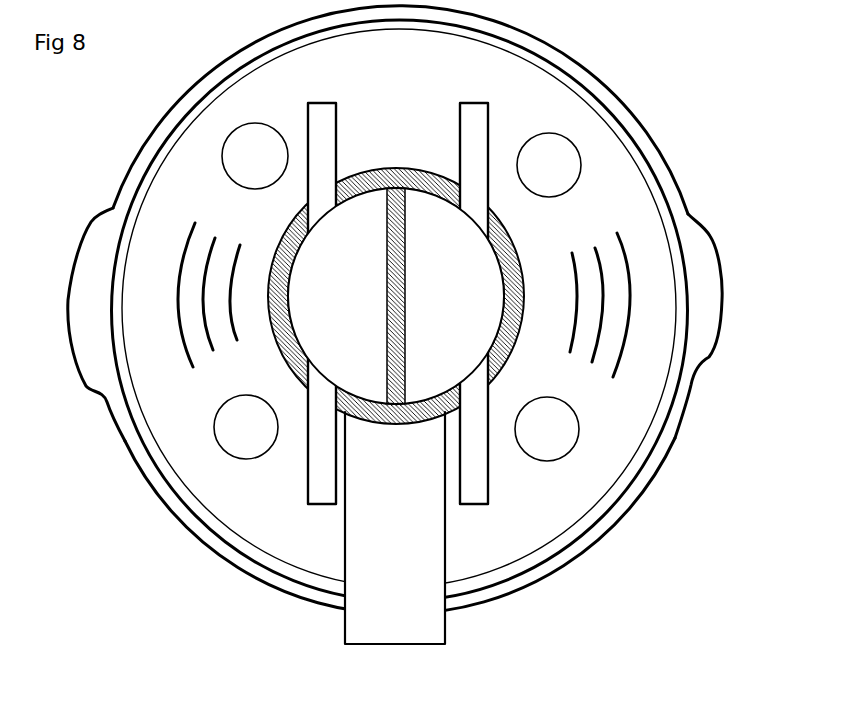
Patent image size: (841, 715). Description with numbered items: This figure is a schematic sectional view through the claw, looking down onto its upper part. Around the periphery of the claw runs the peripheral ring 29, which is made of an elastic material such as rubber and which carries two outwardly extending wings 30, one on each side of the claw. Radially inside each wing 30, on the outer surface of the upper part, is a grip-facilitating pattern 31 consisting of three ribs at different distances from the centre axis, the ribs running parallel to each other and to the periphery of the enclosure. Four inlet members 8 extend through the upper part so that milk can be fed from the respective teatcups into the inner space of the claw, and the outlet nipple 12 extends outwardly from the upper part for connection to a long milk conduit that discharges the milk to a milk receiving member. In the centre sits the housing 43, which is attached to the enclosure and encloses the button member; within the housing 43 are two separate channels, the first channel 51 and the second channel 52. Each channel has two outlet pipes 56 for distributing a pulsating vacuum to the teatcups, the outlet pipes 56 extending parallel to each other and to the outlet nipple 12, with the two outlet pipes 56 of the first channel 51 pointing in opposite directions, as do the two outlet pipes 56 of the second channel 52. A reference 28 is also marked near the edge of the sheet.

The inlet member 8 is at (250, 152).
The outlet nipple 12 is at (377, 577).
The housing 28 is at (780, 4).
The peripheral ring 29 is at (632, 120).
The wing 30 is at (93, 355).
The grip-facilitating pattern 31 is at (203, 275).
The housing 43 is at (278, 230).
The first channel 51 is at (320, 295).
The second channel 52 is at (440, 295).
The outlet pipe 56 is at (322, 117).